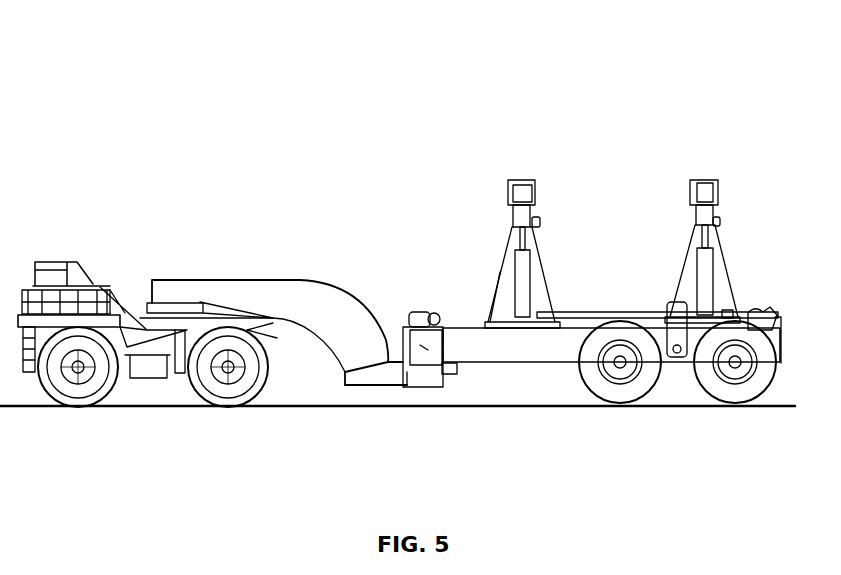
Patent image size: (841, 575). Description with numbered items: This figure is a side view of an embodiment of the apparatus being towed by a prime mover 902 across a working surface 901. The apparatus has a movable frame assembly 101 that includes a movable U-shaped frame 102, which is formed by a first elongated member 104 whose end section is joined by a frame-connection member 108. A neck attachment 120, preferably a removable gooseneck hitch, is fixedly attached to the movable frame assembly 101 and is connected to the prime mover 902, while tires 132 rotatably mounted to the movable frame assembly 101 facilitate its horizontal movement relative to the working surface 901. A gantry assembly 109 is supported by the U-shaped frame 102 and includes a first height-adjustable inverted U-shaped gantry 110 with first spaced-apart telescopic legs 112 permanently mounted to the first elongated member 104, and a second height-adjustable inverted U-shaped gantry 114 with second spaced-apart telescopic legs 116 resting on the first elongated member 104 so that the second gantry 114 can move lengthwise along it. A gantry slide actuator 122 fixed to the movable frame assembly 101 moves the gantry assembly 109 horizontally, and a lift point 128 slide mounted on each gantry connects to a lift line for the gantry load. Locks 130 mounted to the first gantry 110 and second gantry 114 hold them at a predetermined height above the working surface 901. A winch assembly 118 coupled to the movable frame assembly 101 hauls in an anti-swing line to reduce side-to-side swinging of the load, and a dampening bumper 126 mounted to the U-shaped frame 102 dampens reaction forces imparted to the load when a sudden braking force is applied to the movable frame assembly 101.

The movable frame assembly 101 is at (215, 150).
The movable U-shaped frame 102 is at (390, 182).
The first elongated member 104 is at (418, 310).
The frame-connection member 108 is at (397, 388).
The gantry assembly 109 is at (447, 128).
The first height-adjustable inverted U-shaped gantry 110 is at (705, 192).
The first spaced-apart telescopic legs 112 is at (688, 245).
The second height-adjustable inverted U-shaped gantry 114 is at (508, 193).
The second spaced-apart telescopic legs 116 is at (498, 272).
The winch assembly 118 is at (409, 313).
The neck attachment 120 is at (170, 280).
The gantry slide actuator 122 is at (587, 313).
The dampening bumper 126 is at (455, 375).
The lift point 128 is at (520, 188).
The locks 130 is at (540, 222).
The tires 132 is at (580, 368).
The working surface 901 is at (157, 410).
The prime mover 902 is at (42, 262).